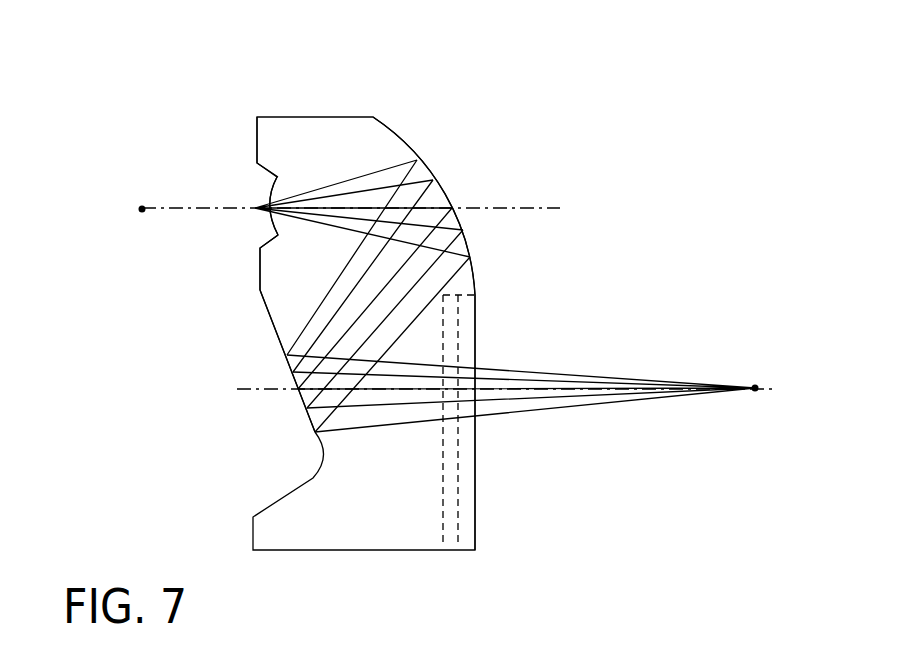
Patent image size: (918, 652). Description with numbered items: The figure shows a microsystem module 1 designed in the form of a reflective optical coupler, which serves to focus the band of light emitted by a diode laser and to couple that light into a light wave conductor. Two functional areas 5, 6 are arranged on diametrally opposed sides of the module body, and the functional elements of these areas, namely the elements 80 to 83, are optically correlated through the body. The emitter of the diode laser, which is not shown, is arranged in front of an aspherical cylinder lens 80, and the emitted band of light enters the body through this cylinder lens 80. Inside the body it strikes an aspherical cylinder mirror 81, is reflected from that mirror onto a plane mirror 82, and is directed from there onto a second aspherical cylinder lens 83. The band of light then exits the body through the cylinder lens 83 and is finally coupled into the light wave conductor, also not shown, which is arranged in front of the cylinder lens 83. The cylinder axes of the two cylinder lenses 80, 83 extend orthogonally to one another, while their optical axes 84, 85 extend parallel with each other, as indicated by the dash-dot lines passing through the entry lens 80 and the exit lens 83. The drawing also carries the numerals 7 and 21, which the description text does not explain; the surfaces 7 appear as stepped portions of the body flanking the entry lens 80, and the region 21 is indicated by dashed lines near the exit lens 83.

The microsystem module 1 is at (373, 85).
The functional area 5 is at (130, 313).
The functional area 6 is at (662, 242).
The stop surfaces 7 is at (267, 143).
The light guide section 21 is at (433, 497).
The aspherical cylinder lens 80 is at (272, 192).
The aspherical cylinder mirror 81 is at (446, 193).
The plane mirror 82 is at (293, 378).
The second aspherical cylinder lens 83 is at (474, 357).
The optical axis 84 is at (142, 209).
The optical axis 85 is at (755, 388).